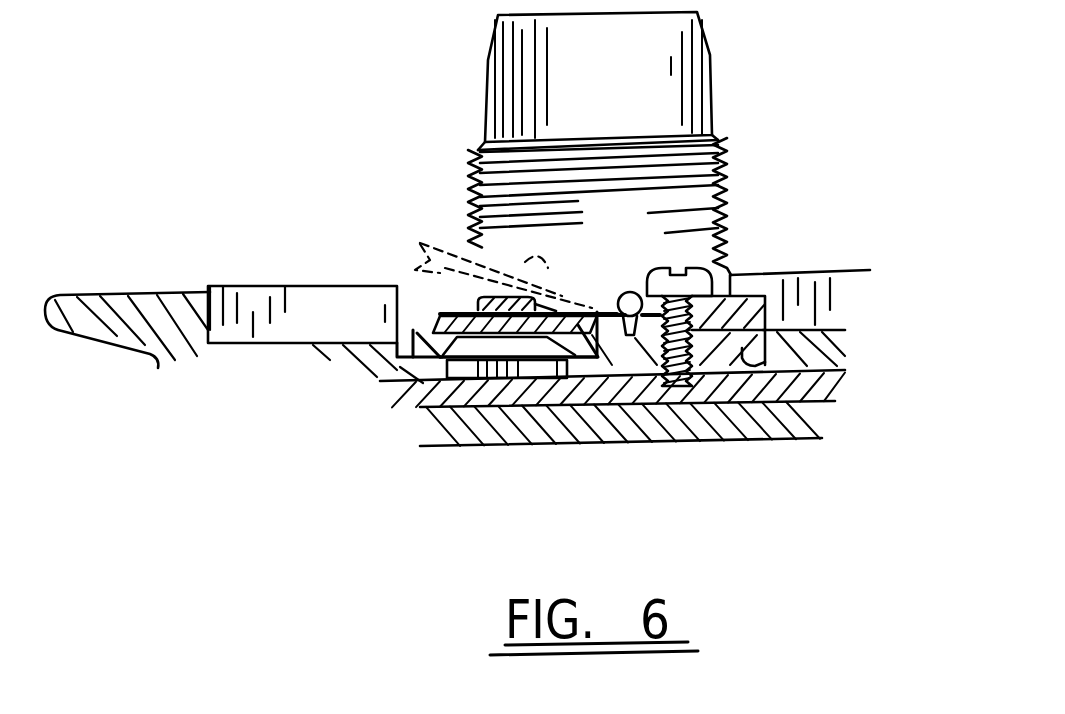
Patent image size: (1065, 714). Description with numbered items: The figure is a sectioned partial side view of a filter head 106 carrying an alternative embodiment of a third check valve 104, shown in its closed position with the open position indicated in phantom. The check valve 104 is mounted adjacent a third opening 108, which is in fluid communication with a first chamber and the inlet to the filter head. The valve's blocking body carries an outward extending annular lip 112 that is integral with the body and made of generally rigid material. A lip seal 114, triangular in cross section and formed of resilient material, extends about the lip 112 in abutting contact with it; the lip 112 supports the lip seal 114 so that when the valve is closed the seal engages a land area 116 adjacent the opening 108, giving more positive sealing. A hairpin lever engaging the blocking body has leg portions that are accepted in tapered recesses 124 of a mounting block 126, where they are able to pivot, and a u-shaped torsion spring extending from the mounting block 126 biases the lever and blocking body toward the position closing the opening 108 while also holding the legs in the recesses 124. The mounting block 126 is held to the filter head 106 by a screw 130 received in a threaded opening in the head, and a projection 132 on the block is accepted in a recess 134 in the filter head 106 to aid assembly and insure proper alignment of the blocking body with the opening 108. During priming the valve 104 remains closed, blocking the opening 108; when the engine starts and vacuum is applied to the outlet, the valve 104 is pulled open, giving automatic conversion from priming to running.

The third check valve 104 is at (497, 200).
The filter head 106 is at (862, 272).
The third opening 108 is at (452, 398).
The annular lip 112 is at (410, 377).
The lip seal 114 is at (612, 378).
The land area 116 is at (420, 381).
The tapered recesses 124 is at (628, 378).
The mounting block 126 is at (745, 292).
The screw 130 is at (705, 268).
The projection 132 is at (810, 350).
The recess 134 is at (805, 400).